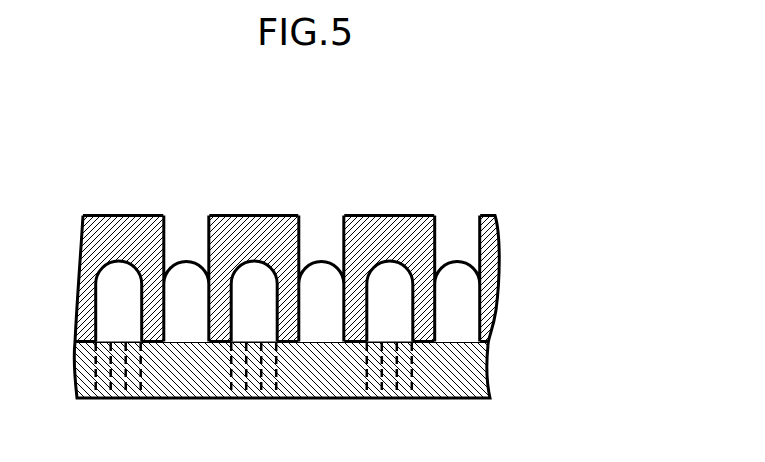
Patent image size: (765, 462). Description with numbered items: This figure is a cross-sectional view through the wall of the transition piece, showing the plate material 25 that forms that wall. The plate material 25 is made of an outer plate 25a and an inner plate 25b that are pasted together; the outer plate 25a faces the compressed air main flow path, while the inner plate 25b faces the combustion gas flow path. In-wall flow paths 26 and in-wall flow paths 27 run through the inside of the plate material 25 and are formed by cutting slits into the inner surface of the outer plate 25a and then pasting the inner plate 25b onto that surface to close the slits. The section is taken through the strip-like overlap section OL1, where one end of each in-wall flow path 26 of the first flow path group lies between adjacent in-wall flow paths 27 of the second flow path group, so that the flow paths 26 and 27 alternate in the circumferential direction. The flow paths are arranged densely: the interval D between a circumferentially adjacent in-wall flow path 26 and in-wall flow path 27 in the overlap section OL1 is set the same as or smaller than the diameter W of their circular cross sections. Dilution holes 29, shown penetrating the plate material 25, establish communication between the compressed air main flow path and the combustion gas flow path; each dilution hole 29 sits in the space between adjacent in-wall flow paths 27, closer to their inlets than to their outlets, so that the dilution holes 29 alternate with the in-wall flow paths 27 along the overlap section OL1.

The plate material 25 is at (315, 306).
The outer plate 25a is at (496, 306).
The inner plate 25b is at (488, 357).
The in-wall flow path 26 is at (403, 318).
The in-wall flow path 27 is at (470, 318).
The dilution hole 29 is at (397, 390).
The diameter W is at (209, 165).
The interval D is at (299, 165).
The overlap section OL1 is at (391, 202).